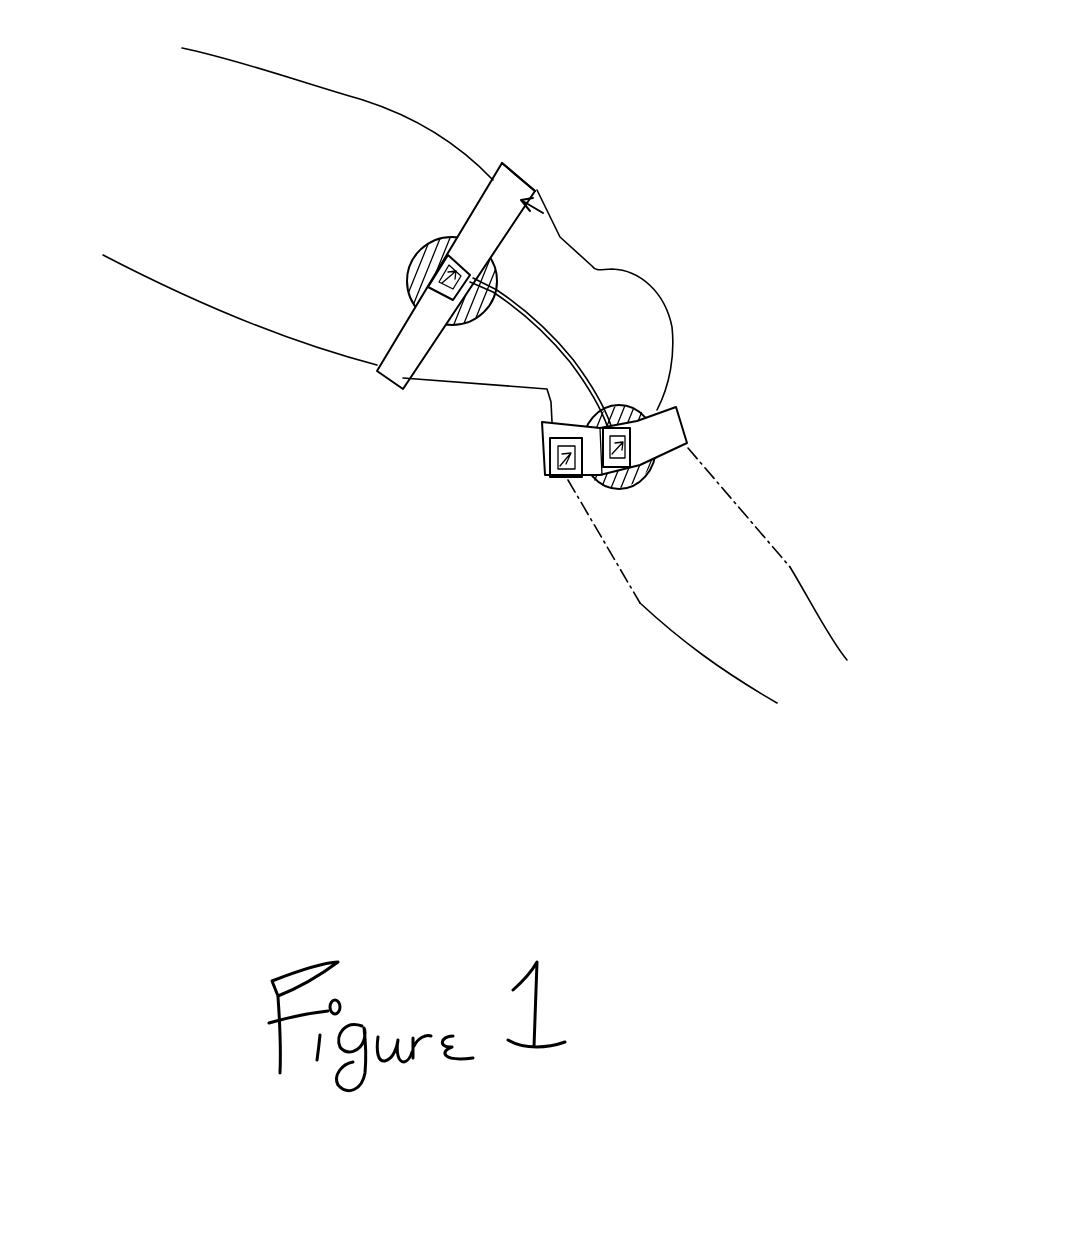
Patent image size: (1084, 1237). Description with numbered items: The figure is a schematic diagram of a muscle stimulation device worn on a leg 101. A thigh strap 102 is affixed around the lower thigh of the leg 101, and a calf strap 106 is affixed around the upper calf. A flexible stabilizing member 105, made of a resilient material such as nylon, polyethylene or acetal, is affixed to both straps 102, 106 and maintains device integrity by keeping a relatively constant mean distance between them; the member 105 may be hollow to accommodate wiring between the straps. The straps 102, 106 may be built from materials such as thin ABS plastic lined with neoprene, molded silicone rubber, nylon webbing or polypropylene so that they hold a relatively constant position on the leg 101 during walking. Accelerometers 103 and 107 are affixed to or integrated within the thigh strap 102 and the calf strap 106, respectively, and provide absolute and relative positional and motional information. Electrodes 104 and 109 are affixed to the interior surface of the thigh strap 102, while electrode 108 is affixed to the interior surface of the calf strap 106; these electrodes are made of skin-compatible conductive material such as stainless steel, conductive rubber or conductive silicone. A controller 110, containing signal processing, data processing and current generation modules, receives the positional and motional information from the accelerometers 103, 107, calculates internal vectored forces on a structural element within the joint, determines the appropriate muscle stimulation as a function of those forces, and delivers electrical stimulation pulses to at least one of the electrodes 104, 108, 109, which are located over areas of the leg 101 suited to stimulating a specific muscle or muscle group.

The leg 101 is at (400, 98).
The thigh strap 102 is at (380, 395).
The accelerometer 103 is at (466, 276).
The electrode 104 is at (505, 296).
The flexible stabilizing member 105 is at (556, 366).
The calf strap 106 is at (707, 438).
The accelerometer 107 is at (646, 414).
The electrode 108 is at (661, 483).
The electrode 109 is at (496, 167).
The controller 110 is at (561, 484).